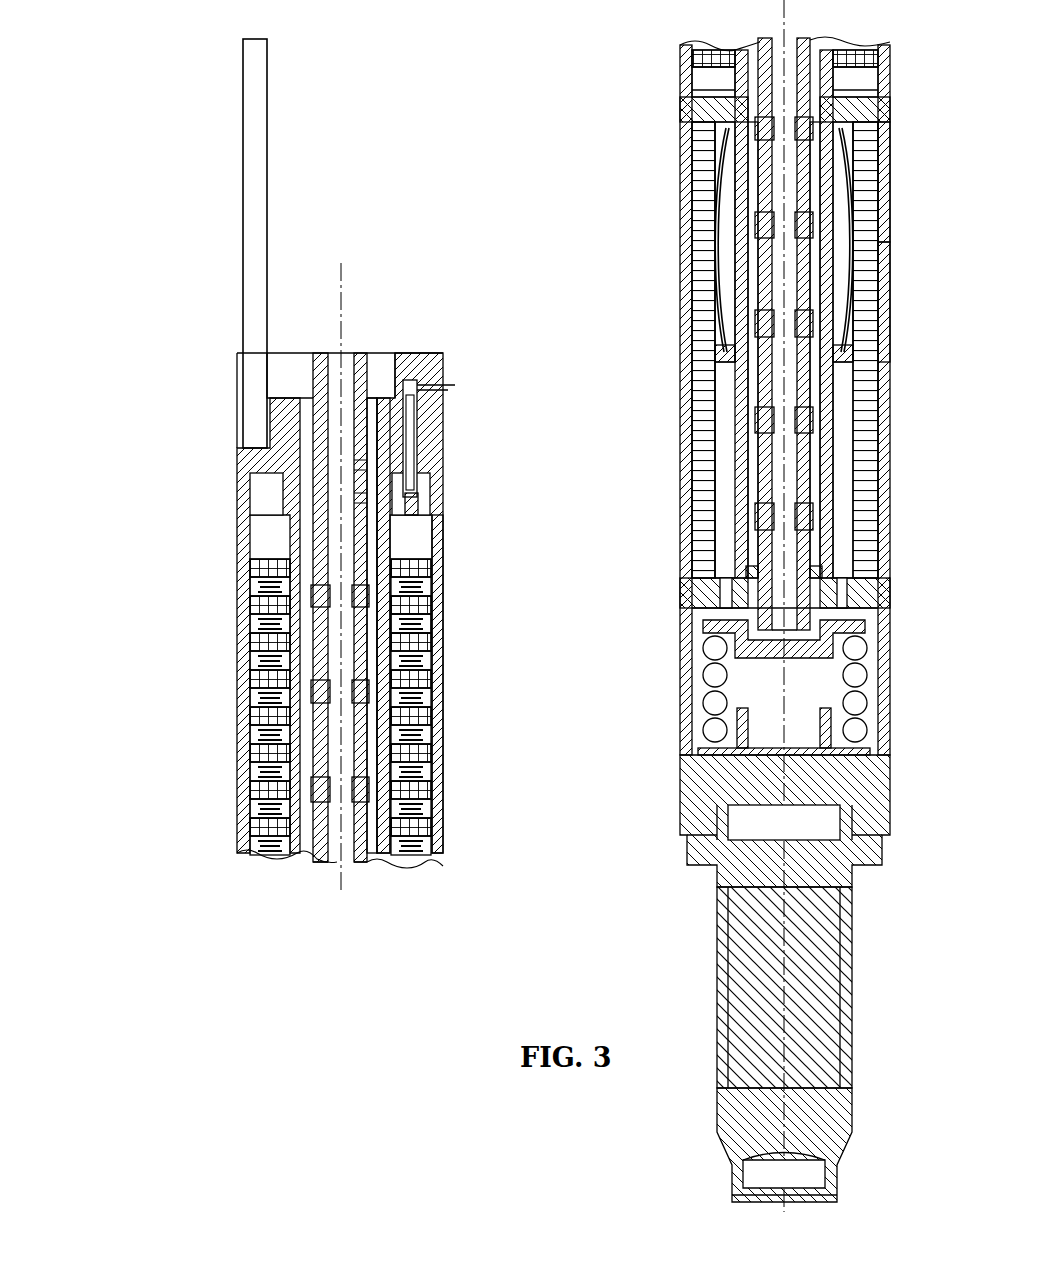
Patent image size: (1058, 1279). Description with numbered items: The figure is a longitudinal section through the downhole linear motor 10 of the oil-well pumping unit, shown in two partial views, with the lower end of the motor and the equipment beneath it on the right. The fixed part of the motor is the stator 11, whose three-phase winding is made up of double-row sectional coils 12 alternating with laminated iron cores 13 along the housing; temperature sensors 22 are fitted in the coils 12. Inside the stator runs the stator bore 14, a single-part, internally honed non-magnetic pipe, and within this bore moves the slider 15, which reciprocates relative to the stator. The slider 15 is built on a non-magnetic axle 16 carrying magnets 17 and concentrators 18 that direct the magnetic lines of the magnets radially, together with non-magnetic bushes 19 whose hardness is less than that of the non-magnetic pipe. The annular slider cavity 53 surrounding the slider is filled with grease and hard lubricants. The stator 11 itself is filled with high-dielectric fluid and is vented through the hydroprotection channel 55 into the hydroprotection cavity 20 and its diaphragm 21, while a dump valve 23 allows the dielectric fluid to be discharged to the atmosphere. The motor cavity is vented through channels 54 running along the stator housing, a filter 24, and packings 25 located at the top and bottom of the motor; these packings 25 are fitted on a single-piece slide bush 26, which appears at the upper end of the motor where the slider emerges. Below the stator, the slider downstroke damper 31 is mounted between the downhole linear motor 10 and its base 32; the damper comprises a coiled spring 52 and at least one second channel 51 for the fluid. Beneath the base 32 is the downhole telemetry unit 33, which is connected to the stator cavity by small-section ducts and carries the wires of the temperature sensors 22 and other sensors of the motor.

The downhole linear motor 10 is at (423, 410).
The stator 11 is at (437, 583).
The double-row sectional coils 12 is at (427, 603).
The laminated iron cores 13 is at (410, 624).
The stator bore 14 is at (383, 647).
The slider 15 is at (358, 383).
The non-magnetic axle 16 is at (345, 367).
The magnets 17 is at (359, 454).
The concentrators 18 is at (362, 465).
The non-magnetic bushes 19 is at (363, 498).
The hydroprotection cavity 20 is at (838, 240).
The diaphragm 21 is at (878, 290).
The temperature sensors 22 is at (245, 602).
The dump valve 23 is at (412, 507).
The filter 24 is at (865, 419).
The packings 25 is at (818, 572).
The single-piece slide bush 26 is at (320, 375).
The slider downstroke damper 31 is at (748, 648).
The base 32 is at (877, 790).
The downhole telemetry unit 33 is at (817, 925).
The second channel 51 is at (725, 593).
The coiled spring 52 is at (855, 648).
The slider cavity 53 is at (373, 807).
The channels 54 is at (883, 183).
The hydroprotection channel 55 is at (715, 127).